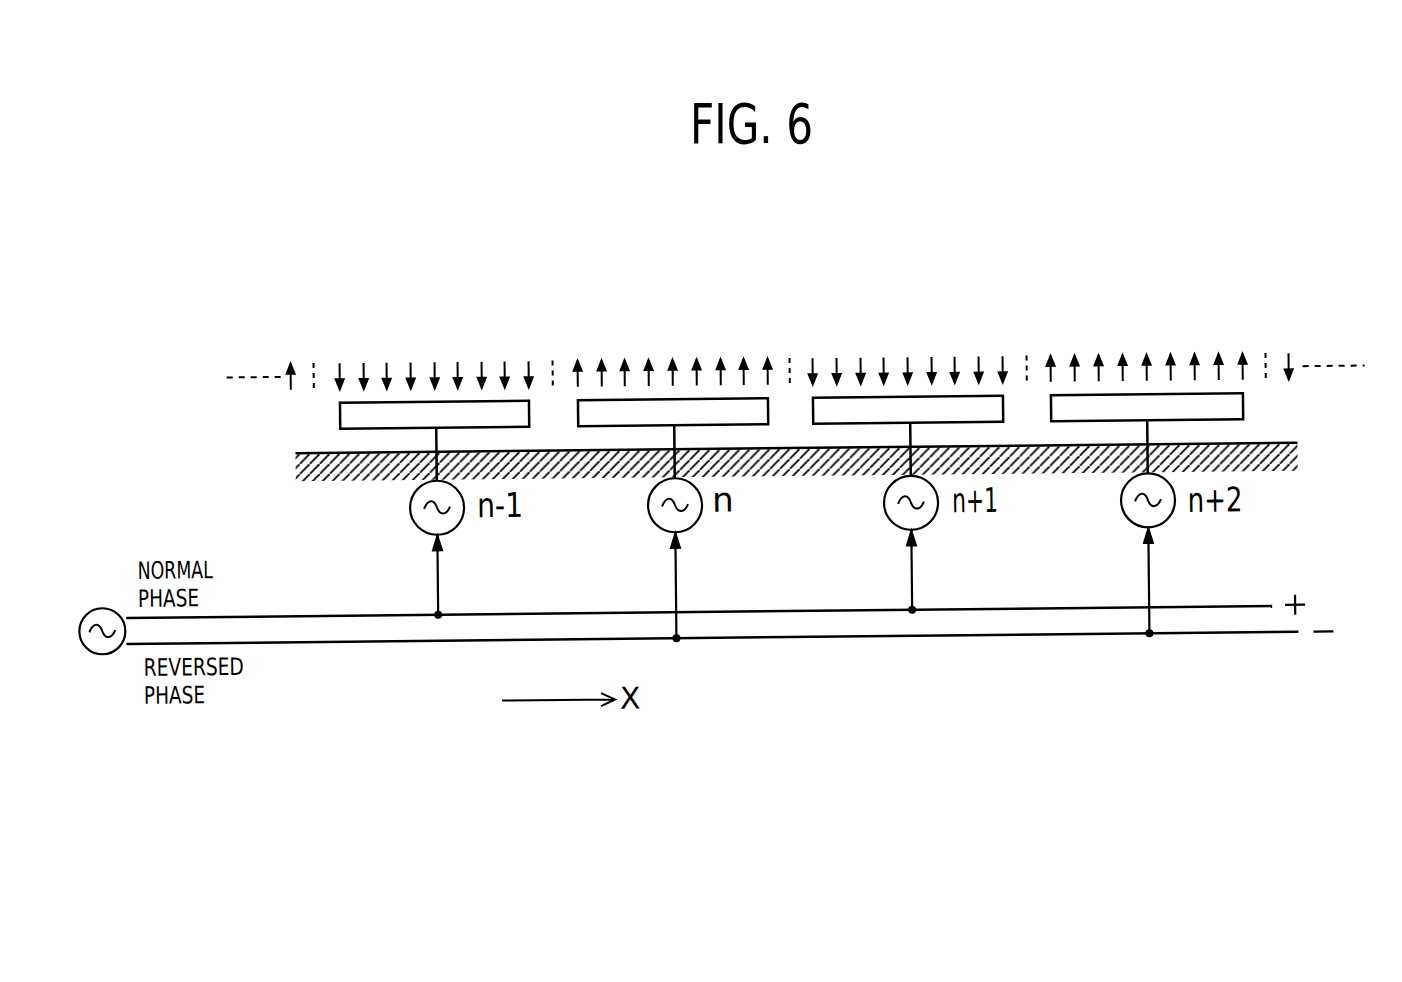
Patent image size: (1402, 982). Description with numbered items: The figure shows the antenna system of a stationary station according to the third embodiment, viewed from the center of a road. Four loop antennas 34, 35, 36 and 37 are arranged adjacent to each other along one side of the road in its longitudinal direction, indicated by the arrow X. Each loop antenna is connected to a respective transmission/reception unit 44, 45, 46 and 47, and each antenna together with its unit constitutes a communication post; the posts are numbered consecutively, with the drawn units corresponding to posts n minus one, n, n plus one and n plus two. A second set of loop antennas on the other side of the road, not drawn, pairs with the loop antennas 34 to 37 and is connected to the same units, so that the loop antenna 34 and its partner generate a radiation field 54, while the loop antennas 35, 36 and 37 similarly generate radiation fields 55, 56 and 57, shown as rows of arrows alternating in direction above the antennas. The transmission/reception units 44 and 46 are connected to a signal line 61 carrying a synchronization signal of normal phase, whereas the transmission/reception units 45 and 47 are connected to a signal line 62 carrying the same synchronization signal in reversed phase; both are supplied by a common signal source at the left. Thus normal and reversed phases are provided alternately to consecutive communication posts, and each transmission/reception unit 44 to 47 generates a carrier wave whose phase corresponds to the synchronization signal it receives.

The loop antenna 34 is at (367, 425).
The loop antenna 35 is at (625, 425).
The loop antenna 36 is at (863, 425).
The loop antenna 37 is at (1098, 425).
The transmission/reception unit 44 is at (458, 523).
The transmission/reception unit 45 is at (700, 517).
The transmission/reception unit 46 is at (933, 519).
The transmission/reception unit 47 is at (1172, 518).
The radiation field 54 is at (484, 370).
The radiation field 55 is at (721, 373).
The radiation field 56 is at (956, 374).
The radiation field 57 is at (1194, 375).
The signal line 61 is at (360, 612).
The signal line 62 is at (397, 638).